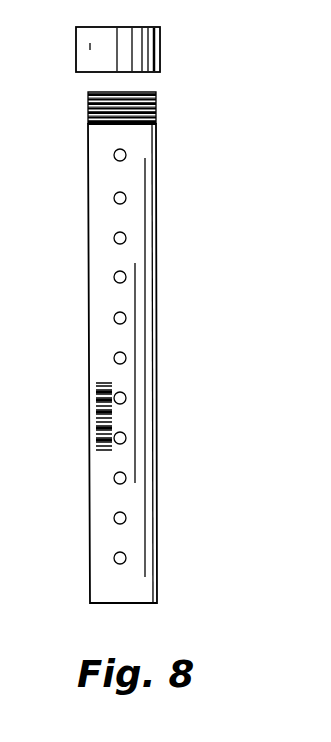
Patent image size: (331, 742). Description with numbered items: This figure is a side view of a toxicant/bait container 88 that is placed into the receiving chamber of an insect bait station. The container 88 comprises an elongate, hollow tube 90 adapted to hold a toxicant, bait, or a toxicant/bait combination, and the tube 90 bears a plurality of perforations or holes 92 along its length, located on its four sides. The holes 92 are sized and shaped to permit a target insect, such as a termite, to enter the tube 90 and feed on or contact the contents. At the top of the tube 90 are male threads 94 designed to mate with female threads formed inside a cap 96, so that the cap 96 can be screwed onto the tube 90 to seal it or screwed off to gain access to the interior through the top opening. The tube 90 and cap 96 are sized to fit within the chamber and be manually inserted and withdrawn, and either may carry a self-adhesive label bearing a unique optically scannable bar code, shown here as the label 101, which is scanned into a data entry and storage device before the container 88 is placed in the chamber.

The toxicant/bait container 88 is at (60, 319).
The tube 90 is at (157, 253).
The holes 92 is at (114, 157).
The male threads 94 is at (152, 112).
The cap 96 is at (155, 60).
The barcode label 101 is at (96, 413).